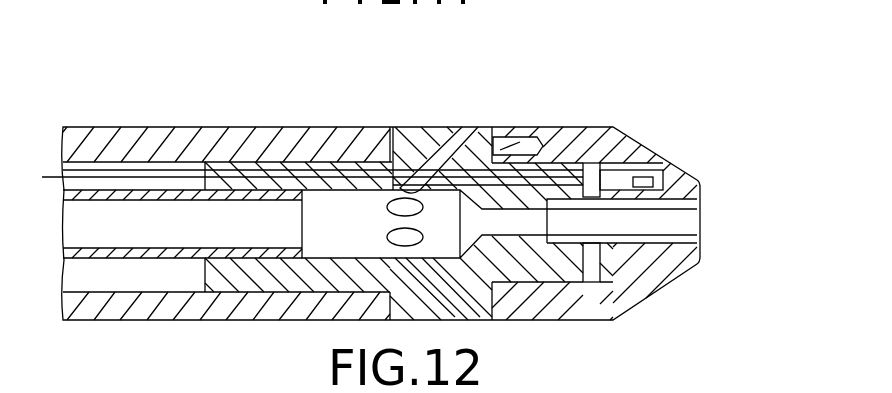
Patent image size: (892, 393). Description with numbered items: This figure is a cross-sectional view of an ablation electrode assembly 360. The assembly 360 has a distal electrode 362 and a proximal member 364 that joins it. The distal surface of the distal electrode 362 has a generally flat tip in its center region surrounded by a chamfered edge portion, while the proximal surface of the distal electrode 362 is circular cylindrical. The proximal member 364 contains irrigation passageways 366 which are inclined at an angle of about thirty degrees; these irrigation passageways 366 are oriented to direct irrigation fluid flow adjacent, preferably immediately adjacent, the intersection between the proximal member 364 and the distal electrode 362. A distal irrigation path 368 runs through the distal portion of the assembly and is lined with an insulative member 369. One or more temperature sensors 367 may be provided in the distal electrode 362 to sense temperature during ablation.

The ablation electrode assembly 360 is at (600, 72).
The distal electrode 362 is at (618, 152).
The proximal member 364 is at (412, 148).
The irrigation passageways 366 is at (454, 146).
The temperature sensors 367 is at (697, 178).
The distal irrigation path 368 is at (693, 223).
The insulative member 369 is at (700, 237).